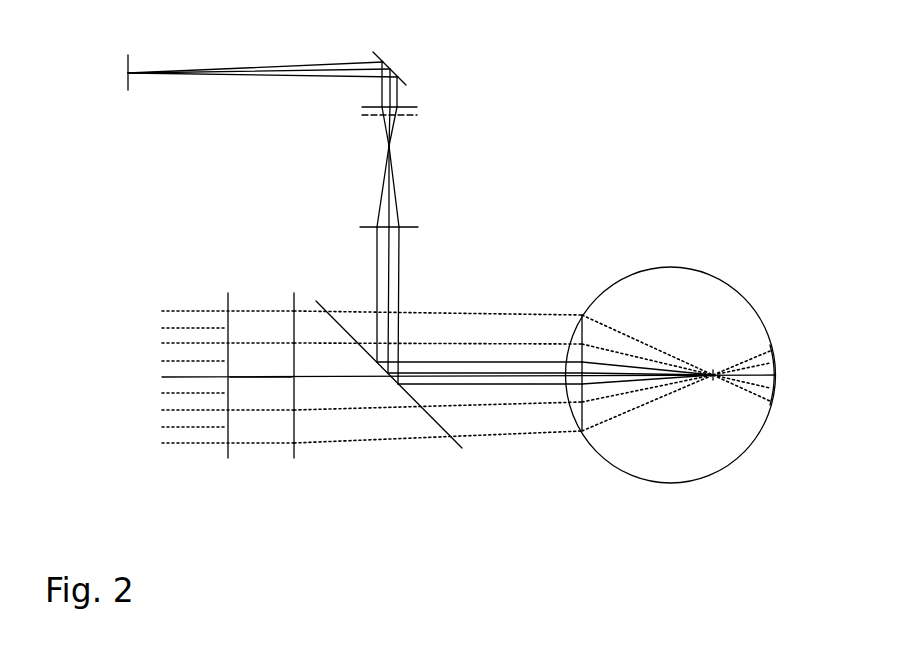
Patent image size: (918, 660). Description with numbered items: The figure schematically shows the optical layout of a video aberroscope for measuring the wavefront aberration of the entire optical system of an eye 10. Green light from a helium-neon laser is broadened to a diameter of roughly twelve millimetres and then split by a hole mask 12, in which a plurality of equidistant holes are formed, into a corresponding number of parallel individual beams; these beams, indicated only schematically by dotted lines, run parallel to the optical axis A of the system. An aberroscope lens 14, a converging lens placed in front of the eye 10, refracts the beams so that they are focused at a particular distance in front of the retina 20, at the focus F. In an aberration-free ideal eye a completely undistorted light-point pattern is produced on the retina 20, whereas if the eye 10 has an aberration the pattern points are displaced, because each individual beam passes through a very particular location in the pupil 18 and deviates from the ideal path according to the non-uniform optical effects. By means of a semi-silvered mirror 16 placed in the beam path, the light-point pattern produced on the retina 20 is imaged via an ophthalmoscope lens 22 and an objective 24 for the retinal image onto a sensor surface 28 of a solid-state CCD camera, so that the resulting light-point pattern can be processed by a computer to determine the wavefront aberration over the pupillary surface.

The eye 10 is at (687, 285).
The hole mask 12 is at (228, 293).
The aberroscope lens 14 is at (294, 420).
The semi-silvered mirror 16 is at (447, 430).
The pupil 18 is at (590, 335).
The retina 20 is at (772, 392).
The ophthalmoscope lens 22 is at (365, 226).
The objective 24 is at (417, 106).
The sensor surface 28 is at (125, 80).
The optical axis A is at (250, 378).
The focus F is at (715, 380).